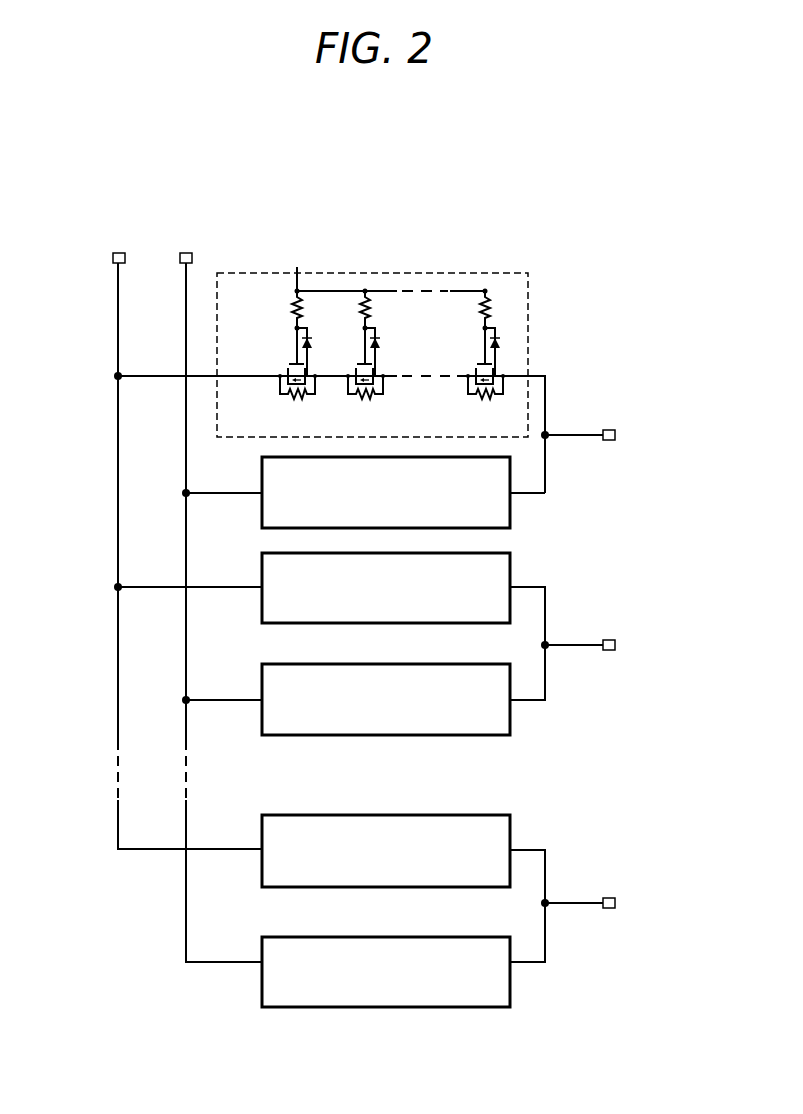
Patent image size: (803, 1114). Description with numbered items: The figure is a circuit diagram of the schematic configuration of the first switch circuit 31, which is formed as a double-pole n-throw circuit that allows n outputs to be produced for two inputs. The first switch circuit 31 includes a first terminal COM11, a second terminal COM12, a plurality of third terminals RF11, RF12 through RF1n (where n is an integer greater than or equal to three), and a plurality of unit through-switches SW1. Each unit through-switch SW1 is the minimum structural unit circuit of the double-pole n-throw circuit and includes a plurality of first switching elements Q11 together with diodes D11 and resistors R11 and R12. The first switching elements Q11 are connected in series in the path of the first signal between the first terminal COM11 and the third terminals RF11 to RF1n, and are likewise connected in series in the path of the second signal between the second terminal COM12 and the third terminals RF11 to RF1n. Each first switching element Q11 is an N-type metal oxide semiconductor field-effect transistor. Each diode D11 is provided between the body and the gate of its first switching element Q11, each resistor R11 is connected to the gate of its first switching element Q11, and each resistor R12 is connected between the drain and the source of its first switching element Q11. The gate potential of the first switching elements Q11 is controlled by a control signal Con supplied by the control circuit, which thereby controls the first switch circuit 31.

The first switch circuit 31 is at (397, 184).
The first terminal COM11 is at (159, 534).
The second terminal COM12 is at (211, 590).
The control signal Con is at (295, 262).
The resistor R11 is at (269, 309).
The first switching element Q11 is at (271, 355).
The diode D11 is at (327, 352).
The resistor R12 is at (296, 403).
The unit through-switch SW1 is at (472, 273).
The third terminal RF11 is at (610, 435).
The third terminal RF12 is at (610, 645).
The third terminal RF1n is at (610, 903).